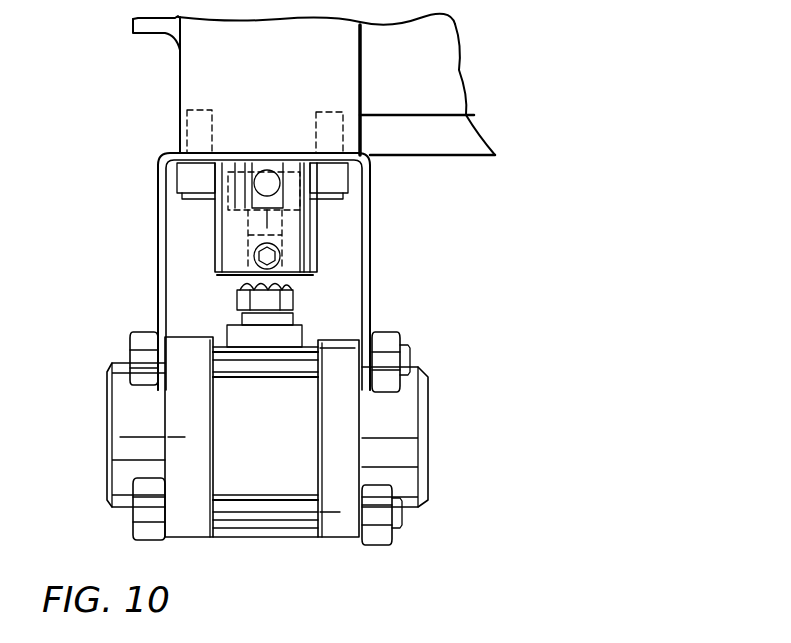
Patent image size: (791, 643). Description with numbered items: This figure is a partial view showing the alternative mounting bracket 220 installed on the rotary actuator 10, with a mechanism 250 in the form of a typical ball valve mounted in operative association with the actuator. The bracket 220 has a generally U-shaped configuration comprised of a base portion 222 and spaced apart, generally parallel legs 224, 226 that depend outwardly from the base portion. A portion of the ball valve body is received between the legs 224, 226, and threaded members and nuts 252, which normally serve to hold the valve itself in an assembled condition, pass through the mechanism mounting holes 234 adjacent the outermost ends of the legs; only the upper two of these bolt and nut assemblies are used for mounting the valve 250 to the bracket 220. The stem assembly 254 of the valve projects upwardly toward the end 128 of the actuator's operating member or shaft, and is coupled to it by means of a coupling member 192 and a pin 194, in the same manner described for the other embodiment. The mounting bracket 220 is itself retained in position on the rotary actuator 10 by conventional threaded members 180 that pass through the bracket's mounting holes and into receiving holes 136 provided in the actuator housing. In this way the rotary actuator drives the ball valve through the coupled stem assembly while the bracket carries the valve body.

The rotary actuator 10 is at (345, 95).
The receiving holes 136 is at (178, 135).
The end of the operating member or shaft 128 is at (236, 162).
The pin 194 is at (271, 169).
The base portion 222 is at (338, 158).
The threaded members 180 is at (178, 195).
The leg 224 is at (157, 277).
The mounting bracket 220 is at (229, 261).
The coupling member 192 is at (305, 262).
The leg 226 is at (370, 283).
The stem assembly 254 is at (288, 278).
The mechanism mounting holes 234 is at (168, 344).
The threaded members and nuts 252 is at (386, 358).
The mechanism 250 is at (400, 445).